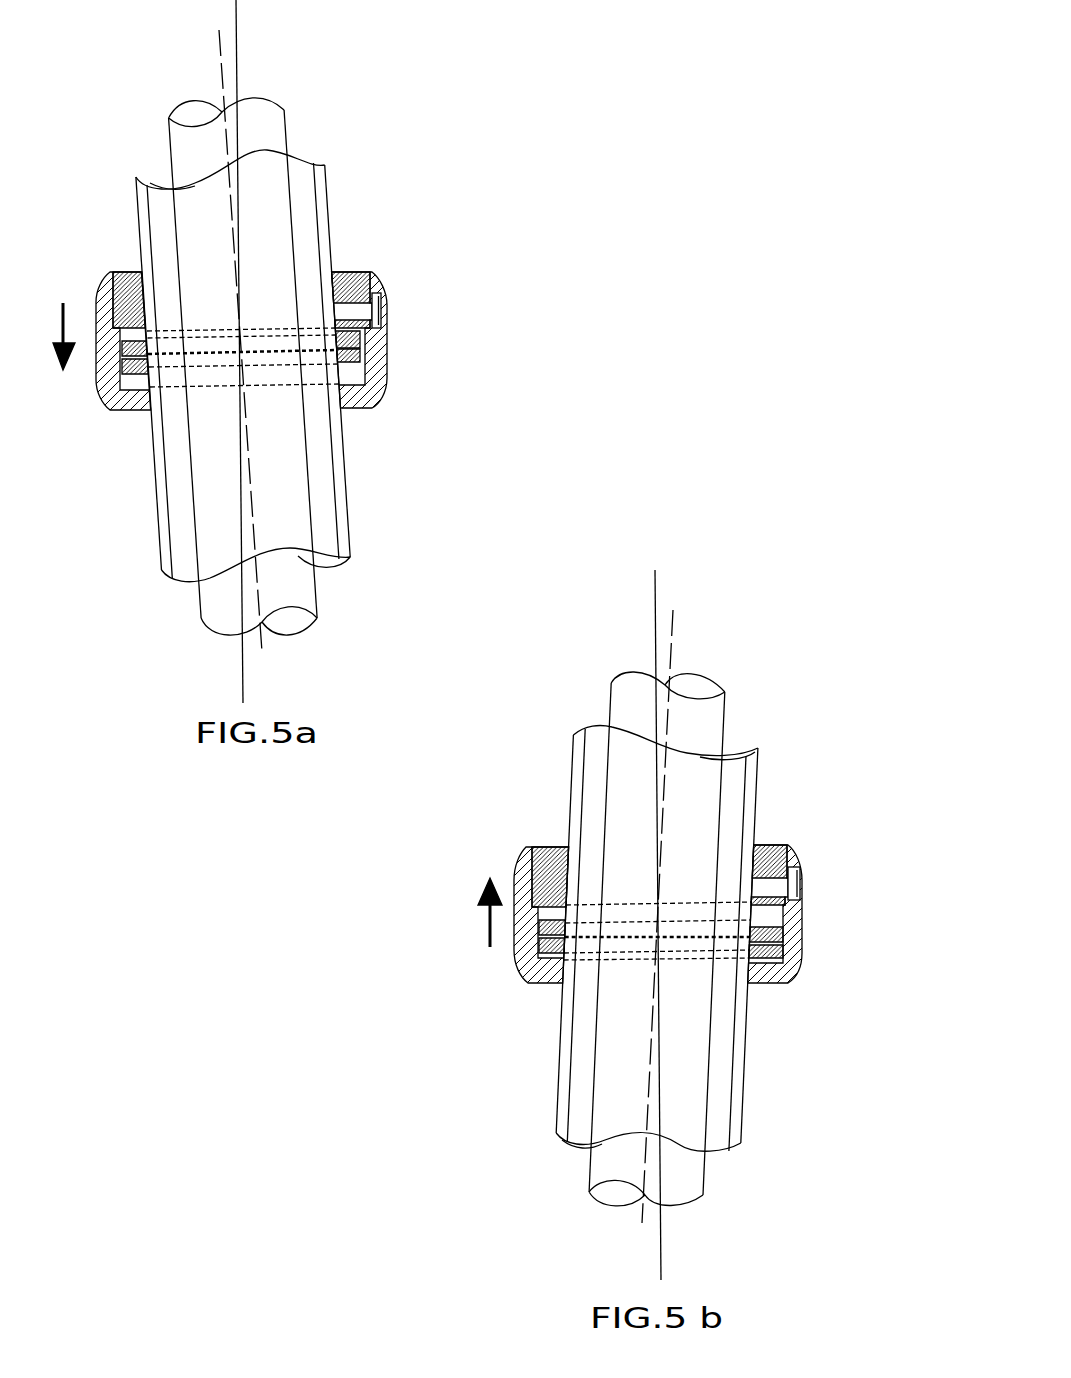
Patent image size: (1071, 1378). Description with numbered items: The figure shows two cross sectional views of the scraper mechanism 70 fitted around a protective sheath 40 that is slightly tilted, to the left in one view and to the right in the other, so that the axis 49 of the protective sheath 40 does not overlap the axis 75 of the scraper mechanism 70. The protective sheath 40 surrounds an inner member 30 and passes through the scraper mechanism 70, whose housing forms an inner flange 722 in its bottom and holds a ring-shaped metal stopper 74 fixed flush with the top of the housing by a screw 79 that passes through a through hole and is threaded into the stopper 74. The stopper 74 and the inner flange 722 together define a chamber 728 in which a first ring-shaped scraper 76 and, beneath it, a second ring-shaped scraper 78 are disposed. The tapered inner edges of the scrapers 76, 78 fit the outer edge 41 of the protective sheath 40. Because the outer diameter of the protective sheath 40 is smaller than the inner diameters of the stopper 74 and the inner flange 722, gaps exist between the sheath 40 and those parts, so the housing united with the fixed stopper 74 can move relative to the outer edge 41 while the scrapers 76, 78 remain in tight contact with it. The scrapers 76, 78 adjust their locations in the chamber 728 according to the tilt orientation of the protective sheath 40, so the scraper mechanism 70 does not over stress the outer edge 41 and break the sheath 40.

In FIG. 5a, the inner tube 30 is at (277, 130).
In FIG. 5b, the inner tube 30 is at (720, 712).
In FIG. 5a, the protective sheath 40 is at (318, 187).
In FIG. 5b, the protective sheath 40 is at (740, 763).
In FIG. 5a, the outer edge 41 is at (153, 480).
In FIG. 5b, the outer edge 41 is at (560, 1050).
In FIG. 5a, the axis 49 is at (220, 50).
In FIG. 5b, the axis 49 is at (673, 632).
In FIG. 5a, the axis 75 is at (238, 57).
In FIG. 5b, the axis 75 is at (656, 632).
In FIG. 5a, the scraper mechanism 70 is at (311, 346).
In FIG. 5b, the scraper mechanism 70 is at (606, 921).
In FIG. 5a, the inner flange 722 is at (135, 402).
In FIG. 5b, the inner flange 722 is at (550, 983).
In FIG. 5a, the stopper 74 is at (132, 282).
In FIG. 5b, the stopper 74 is at (547, 847).
In FIG. 5a, the chamber 728 is at (118, 318).
In FIG. 5b, the chamber 728 is at (542, 882).
In FIG. 5a, the first ring-shaped scraper 76 is at (355, 338).
In FIG. 5b, the first ring-shaped scraper 76 is at (777, 932).
In FIG. 5a, the second ring-shaped scraper 78 is at (362, 358).
In FIG. 5b, the second ring-shaped scraper 78 is at (777, 949).
In FIG. 5a, the screw 79 is at (378, 307).
In FIG. 5b, the screw 79 is at (792, 884).